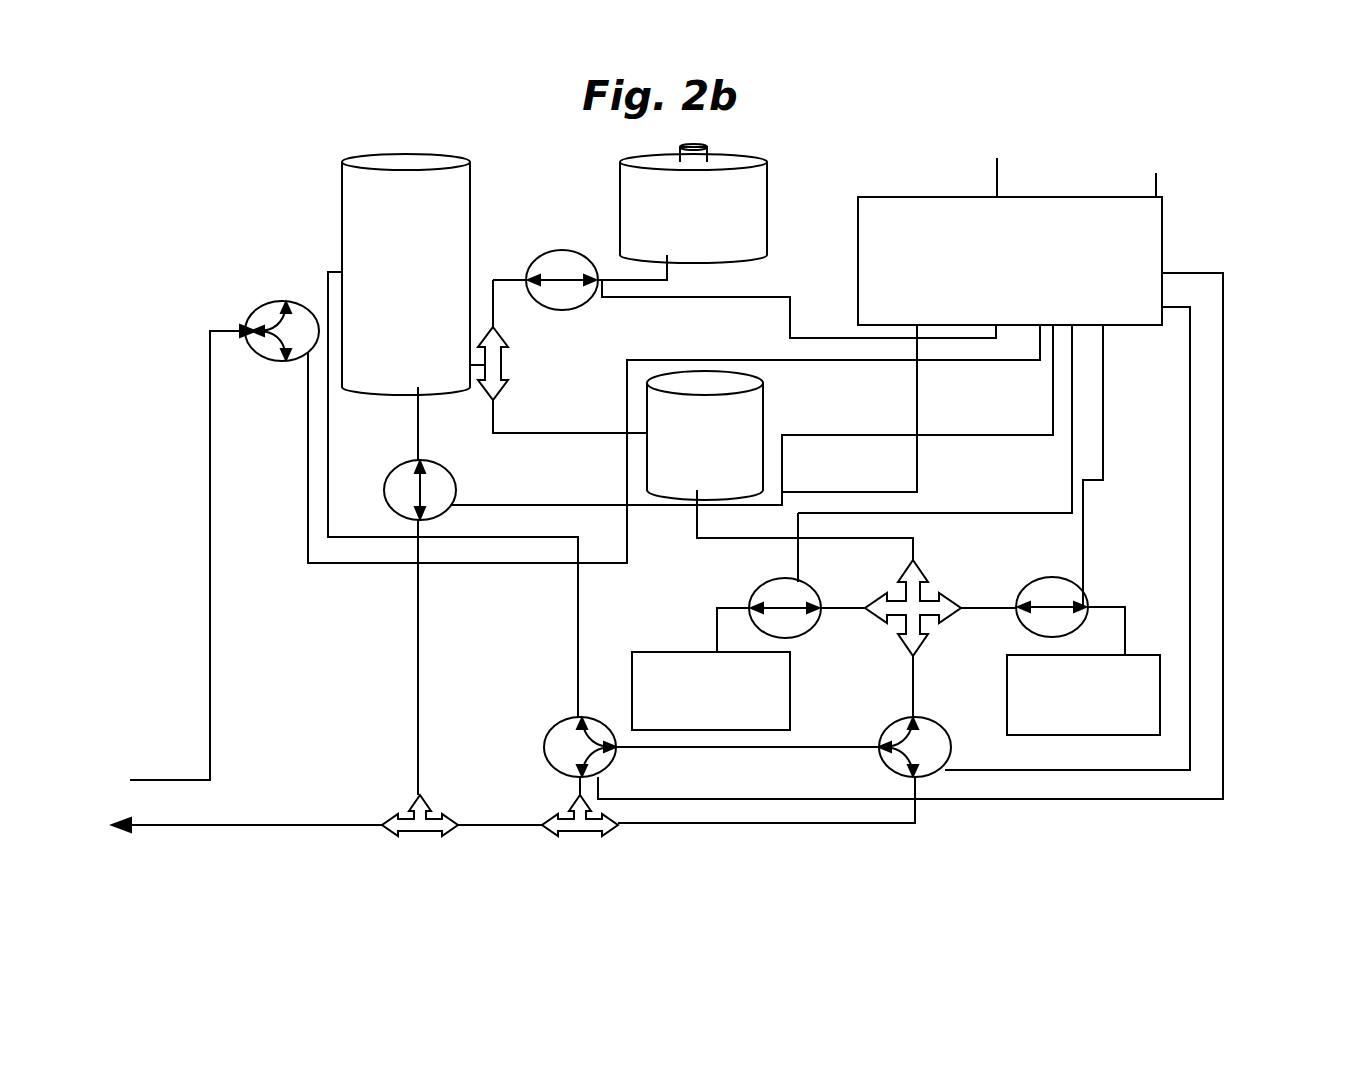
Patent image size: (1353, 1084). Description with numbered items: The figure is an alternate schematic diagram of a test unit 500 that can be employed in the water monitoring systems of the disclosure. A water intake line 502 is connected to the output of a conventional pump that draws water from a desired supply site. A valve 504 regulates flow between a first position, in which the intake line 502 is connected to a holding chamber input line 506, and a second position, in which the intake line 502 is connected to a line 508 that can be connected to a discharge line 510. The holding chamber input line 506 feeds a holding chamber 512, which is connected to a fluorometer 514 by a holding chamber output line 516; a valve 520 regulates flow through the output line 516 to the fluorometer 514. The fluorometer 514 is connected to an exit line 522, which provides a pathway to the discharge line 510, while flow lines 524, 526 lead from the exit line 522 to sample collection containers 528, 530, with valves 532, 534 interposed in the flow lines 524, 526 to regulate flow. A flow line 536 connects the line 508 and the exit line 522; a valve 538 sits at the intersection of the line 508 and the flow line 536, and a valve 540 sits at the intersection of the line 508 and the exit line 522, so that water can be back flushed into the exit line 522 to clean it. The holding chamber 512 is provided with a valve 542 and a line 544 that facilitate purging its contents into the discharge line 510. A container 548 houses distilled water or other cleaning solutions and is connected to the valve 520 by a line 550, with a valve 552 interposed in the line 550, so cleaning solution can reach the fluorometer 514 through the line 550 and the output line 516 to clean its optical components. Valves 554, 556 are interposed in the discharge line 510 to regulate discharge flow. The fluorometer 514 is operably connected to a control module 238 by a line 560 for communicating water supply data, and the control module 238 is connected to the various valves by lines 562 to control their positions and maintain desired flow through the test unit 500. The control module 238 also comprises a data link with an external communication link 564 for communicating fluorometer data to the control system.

The test unit 500 is at (192, 178).
The water intake line 502 is at (210, 458).
The valve 504 is at (266, 306).
The holding chamber input line 506 is at (330, 270).
The line 508 is at (323, 430).
The discharge line 510 is at (488, 826).
The holding chamber 512 is at (396, 155).
The fluorometer 514 is at (730, 383).
The holding chamber output line 516 is at (516, 433).
The valve 520 is at (500, 355).
The exit line 522 is at (724, 539).
The flow line 524 is at (840, 608).
The flow line 526 is at (987, 605).
The sample collection container 528 is at (697, 731).
The sample collection container 530 is at (1160, 690).
The valve 532 is at (755, 582).
The valve 534 is at (1070, 578).
The flow line 536 is at (796, 749).
The valve 538 is at (573, 718).
The valve 540 is at (926, 773).
The valve 542 is at (383, 488).
The line 544 is at (418, 617).
The container 548 is at (768, 172).
The line 550 is at (613, 278).
The valve 552 is at (558, 250).
The valve 554 is at (413, 832).
The valve 556 is at (585, 833).
The line 560 is at (795, 492).
The lines 562 is at (722, 297).
The external communication link 564 is at (1160, 180).
The control module 238 is at (1101, 170).